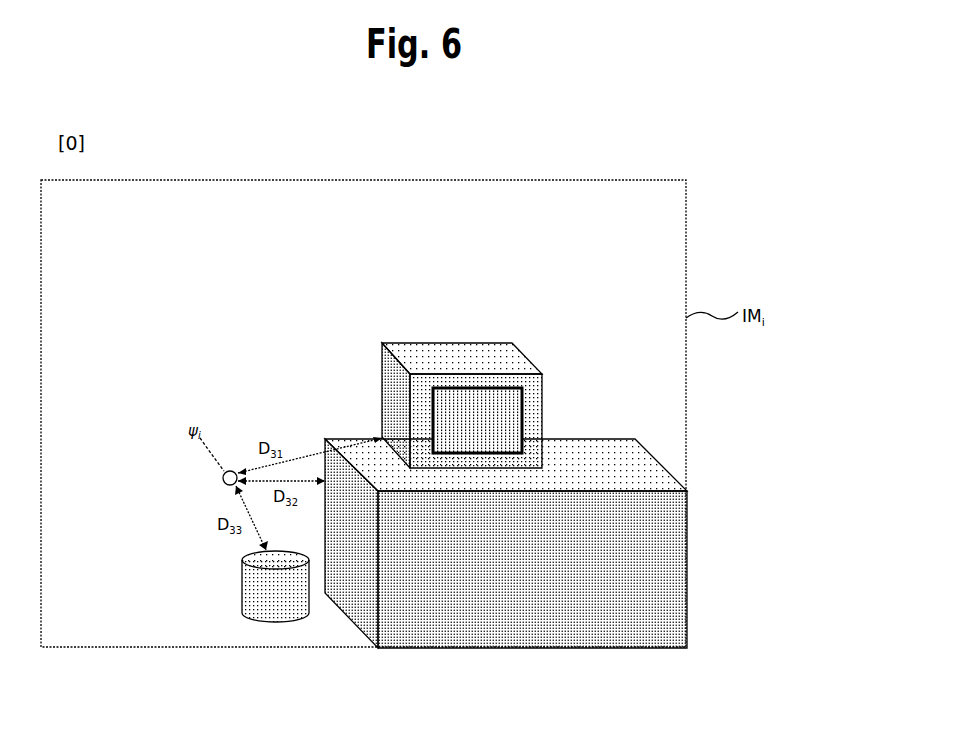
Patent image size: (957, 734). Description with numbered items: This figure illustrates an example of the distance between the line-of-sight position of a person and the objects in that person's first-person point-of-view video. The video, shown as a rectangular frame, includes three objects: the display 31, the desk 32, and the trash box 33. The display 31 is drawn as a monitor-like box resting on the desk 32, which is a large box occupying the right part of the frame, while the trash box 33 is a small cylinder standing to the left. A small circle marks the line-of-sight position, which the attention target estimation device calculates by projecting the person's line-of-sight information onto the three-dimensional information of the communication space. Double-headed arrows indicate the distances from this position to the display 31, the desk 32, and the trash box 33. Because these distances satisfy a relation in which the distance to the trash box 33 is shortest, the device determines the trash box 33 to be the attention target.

The display 31 is at (468, 342).
The desk 32 is at (688, 551).
The trash box 33 is at (241, 596).